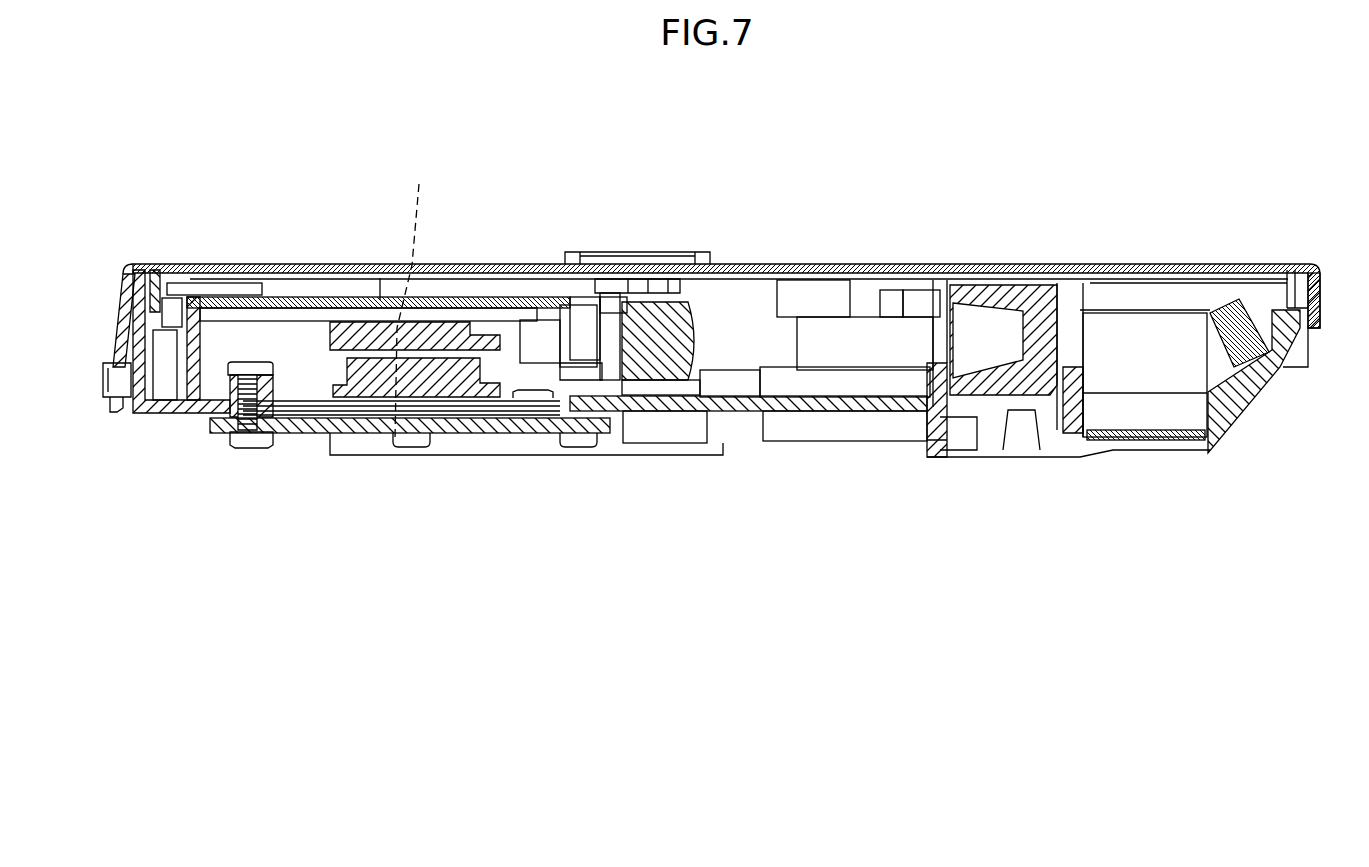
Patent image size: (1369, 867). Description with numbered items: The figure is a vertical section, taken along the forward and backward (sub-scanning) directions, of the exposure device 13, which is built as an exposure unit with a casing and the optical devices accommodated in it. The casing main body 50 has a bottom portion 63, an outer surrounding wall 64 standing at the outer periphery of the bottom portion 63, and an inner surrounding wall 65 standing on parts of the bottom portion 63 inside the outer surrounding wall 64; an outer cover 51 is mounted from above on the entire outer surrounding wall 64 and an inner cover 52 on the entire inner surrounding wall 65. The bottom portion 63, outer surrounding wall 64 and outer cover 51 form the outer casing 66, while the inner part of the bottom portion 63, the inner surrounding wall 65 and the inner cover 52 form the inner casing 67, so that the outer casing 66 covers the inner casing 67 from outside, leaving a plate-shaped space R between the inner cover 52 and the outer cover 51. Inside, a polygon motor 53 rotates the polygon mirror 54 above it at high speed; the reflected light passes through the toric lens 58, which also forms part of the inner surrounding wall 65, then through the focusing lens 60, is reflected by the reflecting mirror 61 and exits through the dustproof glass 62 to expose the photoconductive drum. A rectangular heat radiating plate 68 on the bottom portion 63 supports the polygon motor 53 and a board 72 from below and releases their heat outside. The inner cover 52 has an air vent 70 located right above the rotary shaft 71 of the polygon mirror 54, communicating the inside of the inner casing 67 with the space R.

The exposure device 13 is at (800, 224).
The casing main body 50 is at (170, 418).
The outer cover 51 is at (884, 263).
The inner cover 52 is at (210, 280).
The polygon motor 53 is at (360, 447).
The polygon mirror 54 is at (340, 336).
The toric lens 58 is at (662, 302).
The focusing lens 60 is at (1022, 300).
The reflecting mirror 61 is at (1232, 315).
The dustproof glass 62 is at (1148, 443).
The bottom portion 63 is at (688, 456).
The outer surrounding wall 64 is at (122, 330).
The inner surrounding wall 65 is at (104, 374).
The outer casing 66 is at (541, 262).
The inner casing 67 is at (258, 300).
The heat radiating plate 68 is at (448, 436).
The air vent 70 is at (430, 300).
The rotary shaft 71 is at (414, 297).
The board 72 is at (503, 435).
The plate-shaped space R is at (380, 278).